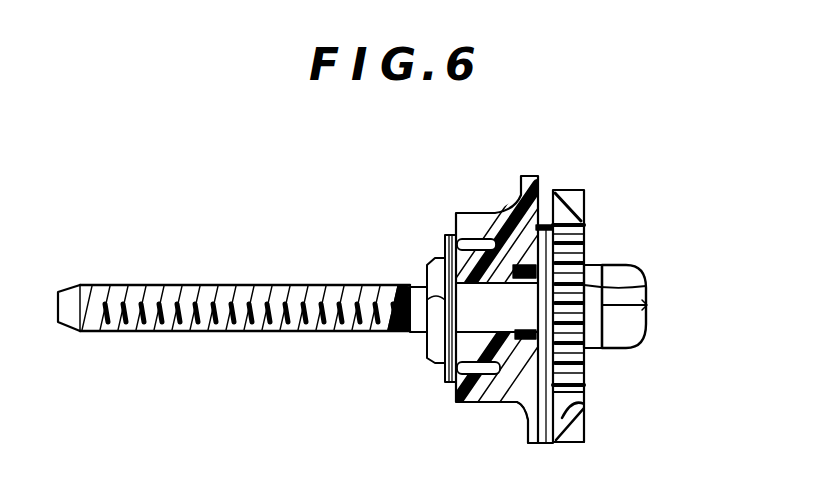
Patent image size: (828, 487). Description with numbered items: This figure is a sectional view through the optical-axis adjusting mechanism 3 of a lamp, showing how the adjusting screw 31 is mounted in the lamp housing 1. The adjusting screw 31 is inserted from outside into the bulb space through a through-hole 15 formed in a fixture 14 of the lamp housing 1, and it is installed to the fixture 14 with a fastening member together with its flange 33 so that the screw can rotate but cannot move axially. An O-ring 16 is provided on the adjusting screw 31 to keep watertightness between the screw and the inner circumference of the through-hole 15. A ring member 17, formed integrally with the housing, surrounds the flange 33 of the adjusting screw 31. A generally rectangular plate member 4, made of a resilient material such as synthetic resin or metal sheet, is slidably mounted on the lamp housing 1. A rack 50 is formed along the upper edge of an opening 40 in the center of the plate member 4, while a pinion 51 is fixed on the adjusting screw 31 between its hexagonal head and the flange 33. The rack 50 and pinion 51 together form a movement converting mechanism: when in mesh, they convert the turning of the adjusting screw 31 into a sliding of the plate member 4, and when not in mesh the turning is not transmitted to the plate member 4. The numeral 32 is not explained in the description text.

The lamp housing 1 is at (520, 178).
The optical-axis adjusting mechanism 3 is at (642, 262).
The plate member 4 is at (570, 188).
The fixture 14 is at (468, 205).
The through-hole 15 is at (396, 286).
The O-ring 16 is at (503, 402).
The ring member 17 is at (585, 355).
The adjusting screw 31 is at (612, 265).
The flange 32 is at (447, 237).
The flange 33 is at (518, 398).
The opening 40 is at (578, 405).
The rack 50 is at (586, 240).
The pinion 51 is at (646, 287).